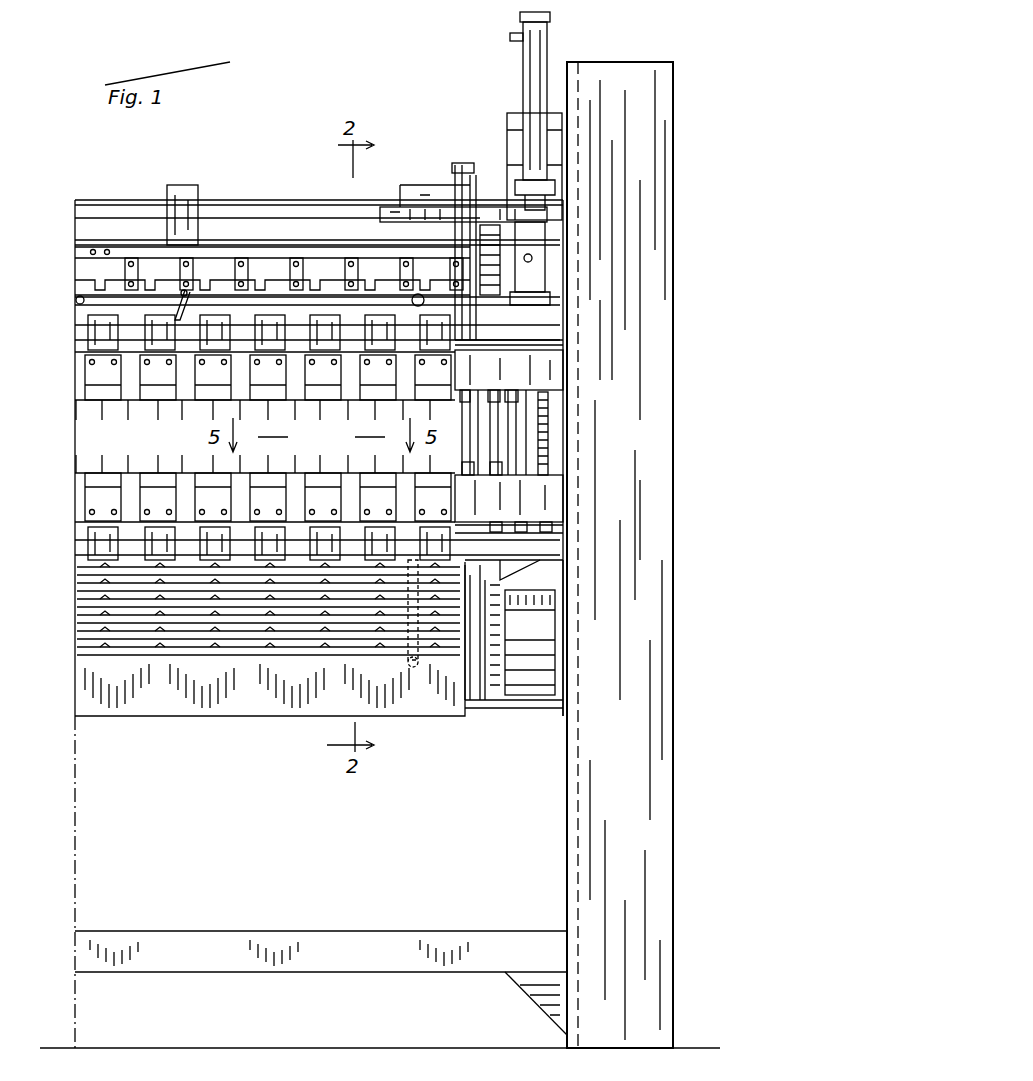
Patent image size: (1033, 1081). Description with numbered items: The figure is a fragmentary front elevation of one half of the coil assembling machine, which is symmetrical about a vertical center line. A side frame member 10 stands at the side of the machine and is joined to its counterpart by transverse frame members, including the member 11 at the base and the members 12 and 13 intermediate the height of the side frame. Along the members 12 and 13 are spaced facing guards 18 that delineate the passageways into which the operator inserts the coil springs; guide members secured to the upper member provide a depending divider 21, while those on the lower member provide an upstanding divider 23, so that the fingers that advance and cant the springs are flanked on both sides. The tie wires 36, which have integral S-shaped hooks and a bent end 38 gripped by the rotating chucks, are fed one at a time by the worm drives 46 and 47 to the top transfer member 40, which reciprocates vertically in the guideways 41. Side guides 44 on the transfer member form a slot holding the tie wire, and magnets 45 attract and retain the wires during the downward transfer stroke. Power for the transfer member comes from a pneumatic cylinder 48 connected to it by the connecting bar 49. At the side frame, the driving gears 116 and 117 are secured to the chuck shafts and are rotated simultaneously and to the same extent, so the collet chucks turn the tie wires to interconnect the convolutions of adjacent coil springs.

The side frame member 10 is at (583, 866).
The transverse frame member 11 is at (350, 963).
The transverse frame member 12 is at (548, 368).
The transverse frame member 13 is at (560, 498).
The facing guard 18 is at (92, 380).
The depending divider 21 is at (130, 410).
The upstanding divider 23 is at (183, 463).
The tie wire 36 is at (250, 630).
The bent end 38 is at (460, 622).
The top transfer member 40 is at (265, 256).
The guideway 41 is at (480, 182).
The side guide 44 is at (226, 265).
The magnet 45 is at (140, 275).
The worm drive 46 is at (426, 304).
The worm drive 47 is at (410, 632).
The cylinder 48 is at (528, 66).
The connecting bar 49 is at (432, 210).
The driving gear 116 is at (548, 420).
The driving gear 117 is at (548, 455).